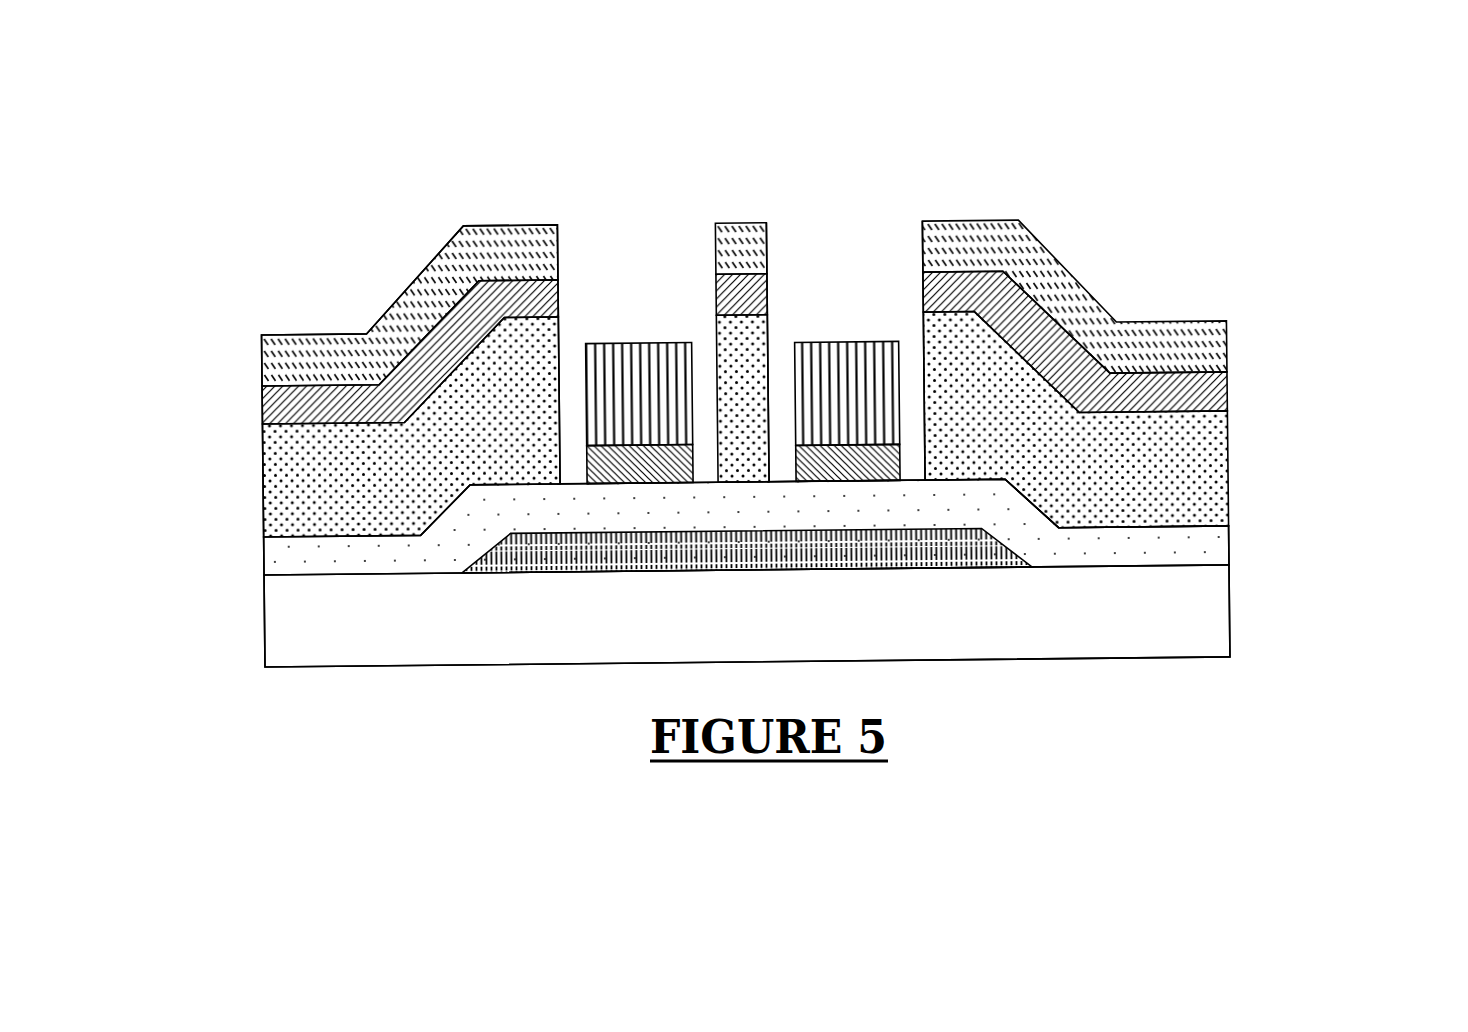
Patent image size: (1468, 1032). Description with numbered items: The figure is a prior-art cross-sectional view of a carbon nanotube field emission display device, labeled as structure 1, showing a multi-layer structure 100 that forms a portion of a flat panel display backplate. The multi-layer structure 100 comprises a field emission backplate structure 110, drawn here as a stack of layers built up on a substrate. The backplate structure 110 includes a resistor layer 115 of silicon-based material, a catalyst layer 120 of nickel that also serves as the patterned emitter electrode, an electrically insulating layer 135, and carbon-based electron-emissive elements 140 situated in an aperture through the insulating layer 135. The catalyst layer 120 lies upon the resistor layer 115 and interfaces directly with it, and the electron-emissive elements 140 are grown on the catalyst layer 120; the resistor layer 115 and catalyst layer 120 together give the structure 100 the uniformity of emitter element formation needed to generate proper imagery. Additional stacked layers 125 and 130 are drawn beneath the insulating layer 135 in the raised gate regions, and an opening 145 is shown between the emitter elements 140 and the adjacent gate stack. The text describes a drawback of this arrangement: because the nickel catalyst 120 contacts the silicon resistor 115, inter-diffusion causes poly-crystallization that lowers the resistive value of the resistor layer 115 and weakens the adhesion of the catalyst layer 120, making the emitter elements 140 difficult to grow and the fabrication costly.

The structure 1 is at (745, 442).
The multi-layer structure 100 is at (747, 616).
The field emission backplate structure 110 is at (747, 550).
The resistor layer 115 is at (746, 526).
The catalyst layer 120 is at (743, 462).
The first conductive layer 125 is at (744, 423).
The second conductive layer 130 is at (744, 346).
The insulating layer 135 is at (743, 302).
The electron-emissive elements 140 is at (743, 393).
The opening 145 is at (845, 351).